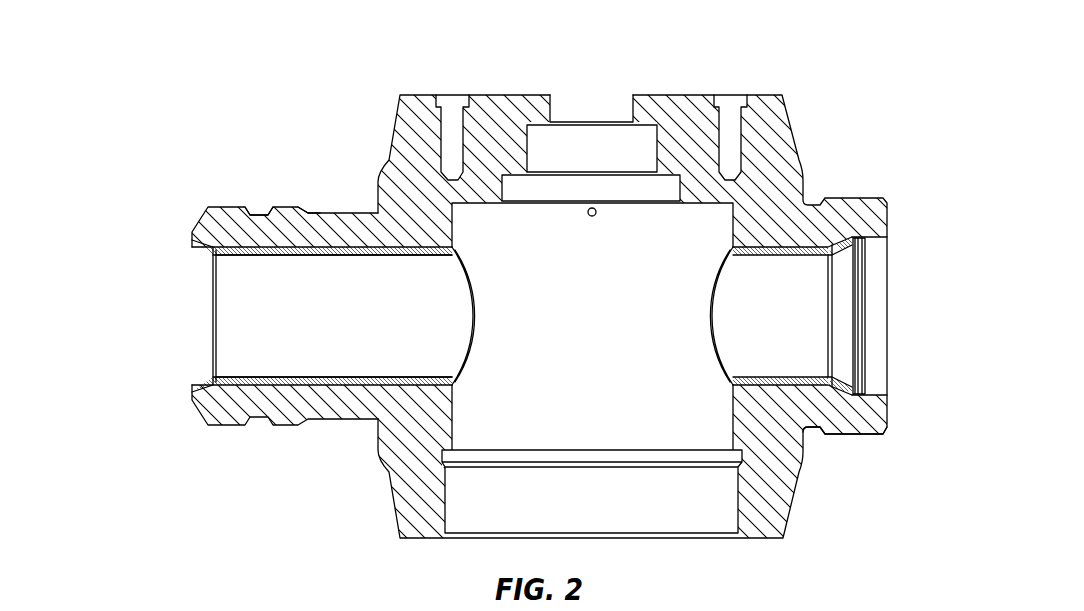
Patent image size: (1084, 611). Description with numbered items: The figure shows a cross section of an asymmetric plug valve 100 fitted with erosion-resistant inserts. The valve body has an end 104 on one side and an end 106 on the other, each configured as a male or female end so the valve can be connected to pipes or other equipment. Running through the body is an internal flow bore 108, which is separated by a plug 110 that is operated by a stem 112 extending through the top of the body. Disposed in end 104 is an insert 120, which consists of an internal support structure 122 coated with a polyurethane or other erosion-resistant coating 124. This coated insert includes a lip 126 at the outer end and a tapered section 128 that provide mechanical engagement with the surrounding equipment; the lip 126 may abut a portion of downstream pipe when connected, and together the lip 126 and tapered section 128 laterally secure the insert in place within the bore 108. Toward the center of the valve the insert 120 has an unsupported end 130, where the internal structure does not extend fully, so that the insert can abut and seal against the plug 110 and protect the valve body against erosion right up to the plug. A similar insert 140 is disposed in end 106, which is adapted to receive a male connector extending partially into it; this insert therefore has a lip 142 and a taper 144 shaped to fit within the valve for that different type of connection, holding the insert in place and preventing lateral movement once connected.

The plug valve 100 is at (271, 121).
The end 104 is at (202, 360).
The end 106 is at (837, 353).
The internal flow bore 108 is at (223, 327).
The plug 110 is at (452, 433).
The stem 112 is at (602, 96).
The insert 120 is at (193, 385).
The internal support structure 122 is at (242, 247).
The erosion-resistant coating 124 is at (298, 247).
The lip 126 is at (192, 242).
The tapered section 128 is at (200, 256).
The unsupported end 130 is at (455, 252).
The insert 140 is at (803, 423).
The lip 142 is at (858, 238).
The taper 144 is at (836, 243).